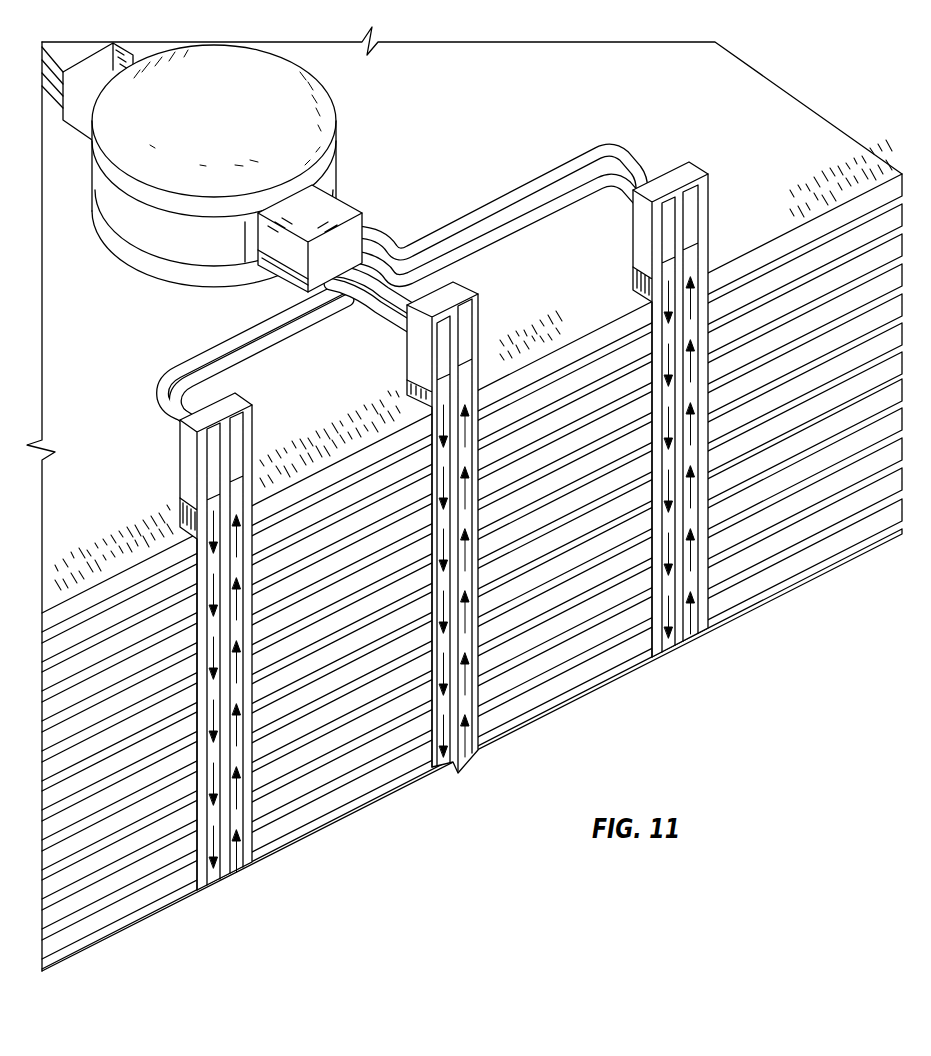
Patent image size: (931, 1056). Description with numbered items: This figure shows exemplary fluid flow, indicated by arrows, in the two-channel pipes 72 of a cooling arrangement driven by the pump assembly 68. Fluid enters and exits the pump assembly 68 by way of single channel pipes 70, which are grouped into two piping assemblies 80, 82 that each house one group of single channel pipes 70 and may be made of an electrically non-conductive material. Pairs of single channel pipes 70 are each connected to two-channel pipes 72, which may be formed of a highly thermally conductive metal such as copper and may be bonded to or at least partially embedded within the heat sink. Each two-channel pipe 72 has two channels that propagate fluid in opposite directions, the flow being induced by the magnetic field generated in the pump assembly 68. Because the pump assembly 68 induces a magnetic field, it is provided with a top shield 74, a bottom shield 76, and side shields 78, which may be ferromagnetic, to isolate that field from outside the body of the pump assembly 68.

The pump assembly 68 is at (263, 42).
The single channel pipes 70 is at (483, 207).
The two-channel pipes 72 is at (715, 210).
The top shield 74 is at (318, 104).
The bottom shield 76 is at (195, 282).
The side shields 78 is at (148, 232).
The piping assembly 80 is at (296, 268).
The piping assembly 82 is at (343, 205).